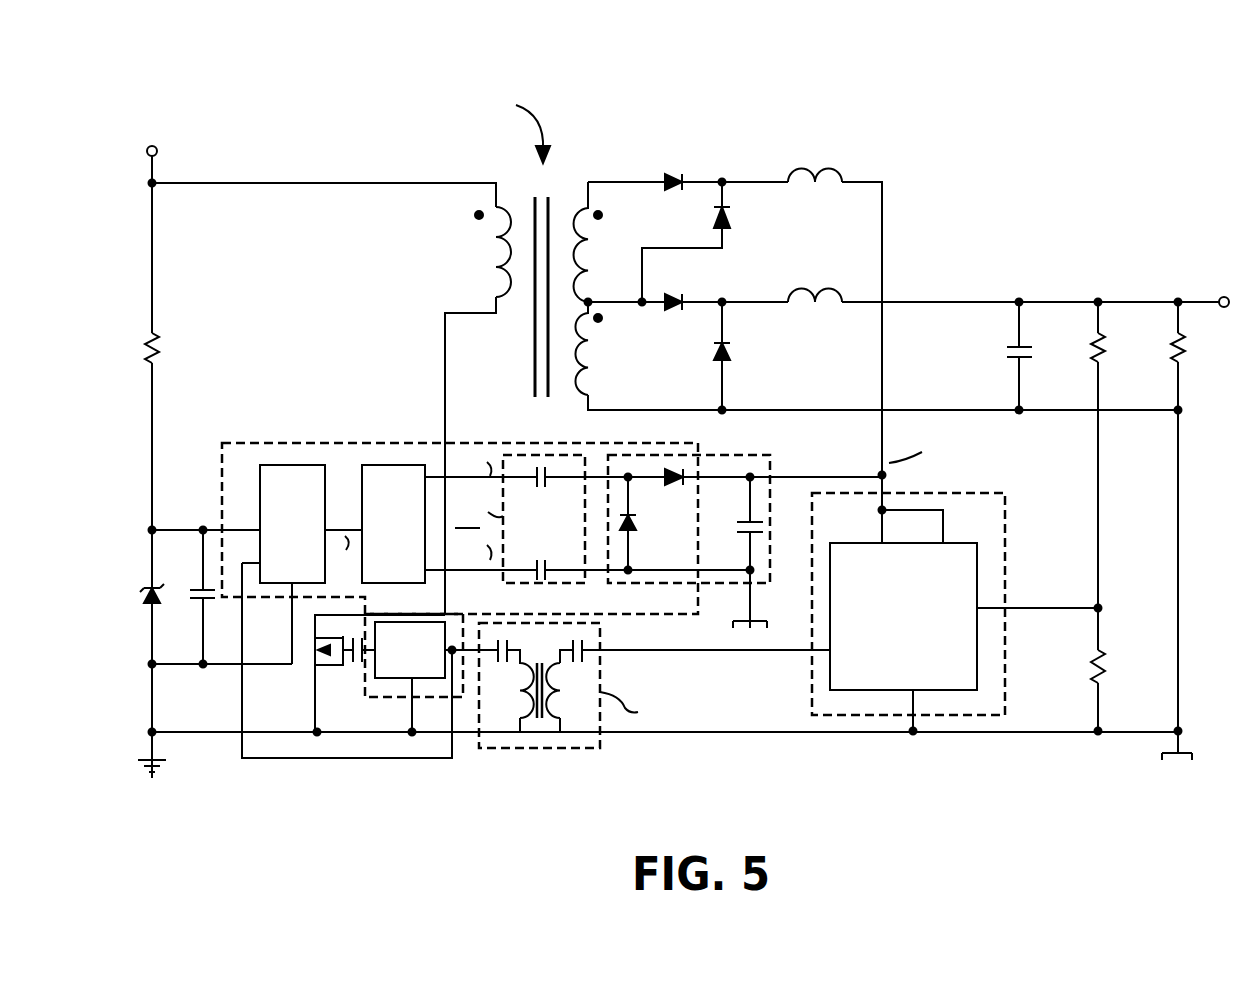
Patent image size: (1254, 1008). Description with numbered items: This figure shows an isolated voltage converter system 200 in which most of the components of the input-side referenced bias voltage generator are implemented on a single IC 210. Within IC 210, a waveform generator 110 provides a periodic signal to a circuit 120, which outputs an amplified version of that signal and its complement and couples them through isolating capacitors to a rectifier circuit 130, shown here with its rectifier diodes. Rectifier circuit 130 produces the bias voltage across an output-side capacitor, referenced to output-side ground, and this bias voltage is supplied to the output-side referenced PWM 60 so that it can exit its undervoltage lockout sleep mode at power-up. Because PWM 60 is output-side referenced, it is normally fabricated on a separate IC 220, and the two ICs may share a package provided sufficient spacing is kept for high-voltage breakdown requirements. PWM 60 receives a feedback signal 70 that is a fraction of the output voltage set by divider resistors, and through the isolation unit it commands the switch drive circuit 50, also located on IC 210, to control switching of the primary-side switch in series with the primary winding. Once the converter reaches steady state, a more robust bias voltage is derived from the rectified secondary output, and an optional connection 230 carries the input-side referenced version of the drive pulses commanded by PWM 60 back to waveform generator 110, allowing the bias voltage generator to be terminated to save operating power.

The isolated voltage converter system 200 is at (985, 142).
The IC 210 is at (376, 440).
The waveform generator 110 is at (312, 554).
The circuit 120 is at (414, 554).
The rectifier circuit 130 is at (775, 470).
The switch drive circuit 50 is at (452, 618).
The optional connection 230 is at (356, 758).
The IC 220 is at (1007, 543).
The output-side referenced PWM 60 is at (920, 663).
The feedback signal 70 is at (1078, 604).